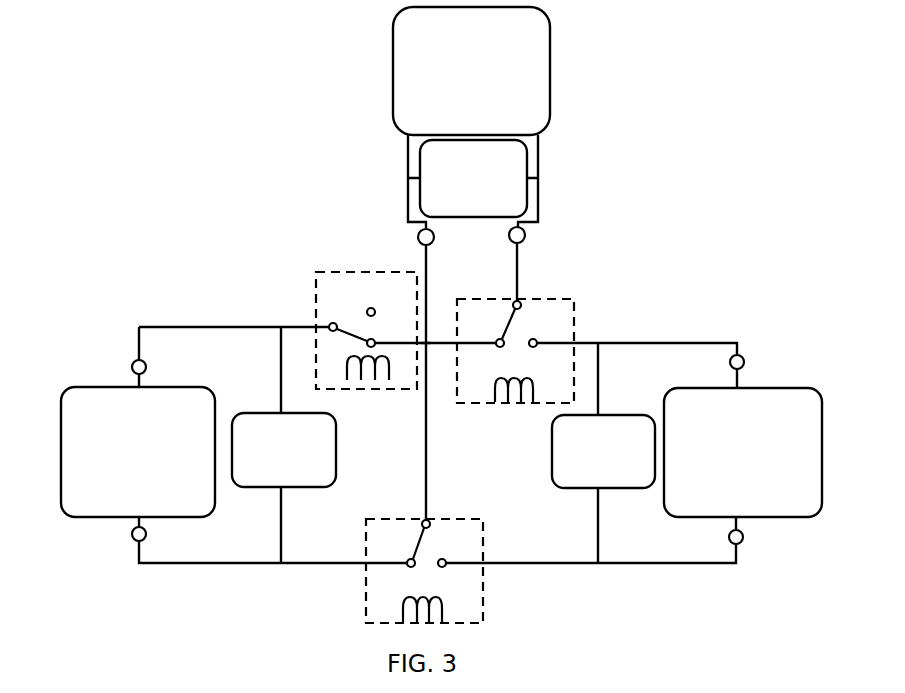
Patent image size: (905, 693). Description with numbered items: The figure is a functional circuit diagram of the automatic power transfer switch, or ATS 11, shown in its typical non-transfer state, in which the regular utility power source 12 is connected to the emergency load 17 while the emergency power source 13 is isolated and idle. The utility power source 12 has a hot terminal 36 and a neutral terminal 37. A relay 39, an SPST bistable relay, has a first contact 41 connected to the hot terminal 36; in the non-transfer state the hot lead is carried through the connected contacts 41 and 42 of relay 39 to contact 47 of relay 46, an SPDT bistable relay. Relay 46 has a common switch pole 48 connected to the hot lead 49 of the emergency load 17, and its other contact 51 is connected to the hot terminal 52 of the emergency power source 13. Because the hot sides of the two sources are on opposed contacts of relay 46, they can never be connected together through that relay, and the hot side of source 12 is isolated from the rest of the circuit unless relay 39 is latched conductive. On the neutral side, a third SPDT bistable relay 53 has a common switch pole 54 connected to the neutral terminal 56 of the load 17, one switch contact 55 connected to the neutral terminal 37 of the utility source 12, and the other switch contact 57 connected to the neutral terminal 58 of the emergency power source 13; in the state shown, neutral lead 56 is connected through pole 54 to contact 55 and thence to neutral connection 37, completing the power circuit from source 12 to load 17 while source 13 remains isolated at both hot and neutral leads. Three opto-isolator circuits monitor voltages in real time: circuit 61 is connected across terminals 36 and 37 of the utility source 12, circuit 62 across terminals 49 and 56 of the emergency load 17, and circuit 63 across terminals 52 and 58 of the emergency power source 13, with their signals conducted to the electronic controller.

The ATS 11 is at (657, 220).
The utility power source 12 is at (60, 488).
The emergency power source 13 is at (822, 433).
The emergency load 17 is at (550, 42).
The hot terminal 36 is at (132, 362).
The neutral terminal 37 is at (133, 534).
The relay 39 is at (328, 272).
The first contact 41 is at (330, 323).
The terminal 42 is at (378, 347).
The relay 46 is at (558, 299).
The contact 47 is at (497, 347).
The common switch pole 48 is at (527, 297).
The hot lead 49 is at (525, 232).
The other contact 51 is at (537, 340).
The hot terminal 52 is at (742, 357).
The relay 53 is at (470, 623).
The common switch pole 54 is at (423, 520).
The switch contact 55 is at (408, 567).
The neutral terminal 56 is at (418, 232).
The other switch contact 57 is at (445, 568).
The neutral terminal 58 is at (741, 543).
The opto-isolator circuit 61 is at (262, 413).
The opto-isolator circuit 62 is at (420, 168).
The opto-isolator circuit 63 is at (612, 488).